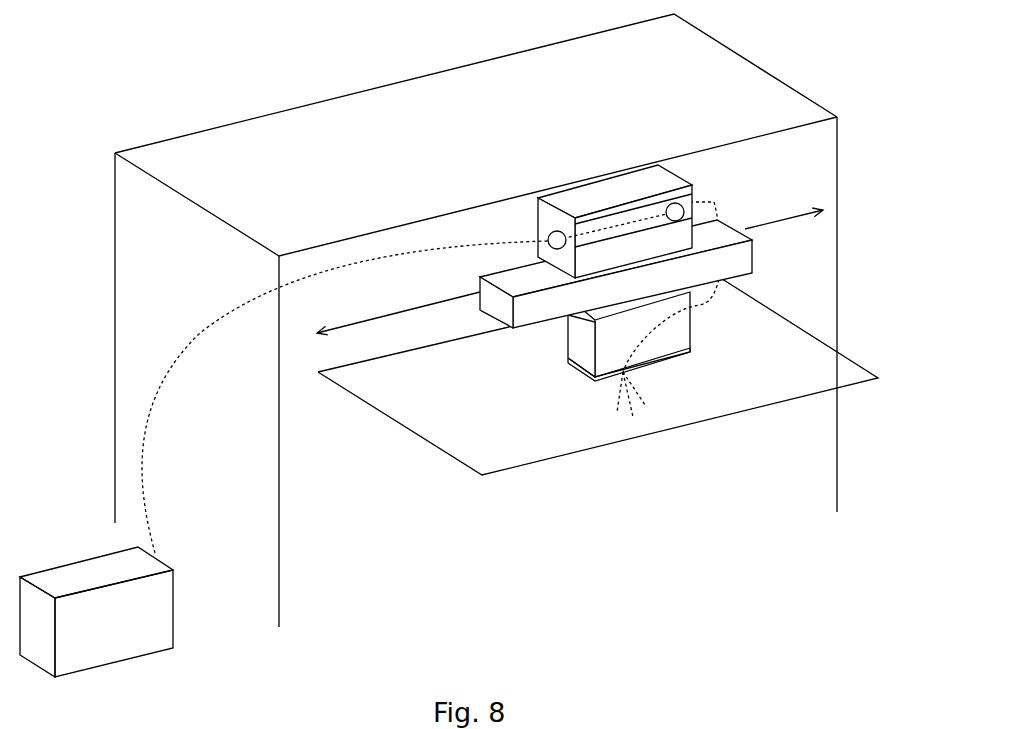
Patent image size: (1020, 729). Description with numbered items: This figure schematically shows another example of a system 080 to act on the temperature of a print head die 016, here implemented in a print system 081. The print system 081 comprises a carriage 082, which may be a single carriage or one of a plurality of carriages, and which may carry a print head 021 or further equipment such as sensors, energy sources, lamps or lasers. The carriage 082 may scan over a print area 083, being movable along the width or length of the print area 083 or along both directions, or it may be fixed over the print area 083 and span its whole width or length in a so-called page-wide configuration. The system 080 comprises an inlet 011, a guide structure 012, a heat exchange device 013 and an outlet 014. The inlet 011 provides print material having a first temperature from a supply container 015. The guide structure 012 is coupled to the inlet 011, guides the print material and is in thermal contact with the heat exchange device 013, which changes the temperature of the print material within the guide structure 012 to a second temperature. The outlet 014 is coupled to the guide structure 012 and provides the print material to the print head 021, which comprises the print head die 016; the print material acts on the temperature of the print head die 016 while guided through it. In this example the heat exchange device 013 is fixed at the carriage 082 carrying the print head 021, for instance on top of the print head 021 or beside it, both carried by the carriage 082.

The print system 081 is at (173, 72).
The system to act on the temperature of a print head die 080 is at (463, 225).
The carriage 082 is at (763, 256).
The print area 083 is at (598, 376).
The heat exchange device 013 is at (588, 197).
The guide structure 012 is at (640, 208).
The inlet 011 is at (545, 235).
The outlet 014 is at (675, 198).
The print head 021 is at (695, 333).
The print head die 016 is at (575, 375).
The supply container 015 is at (284, 459).